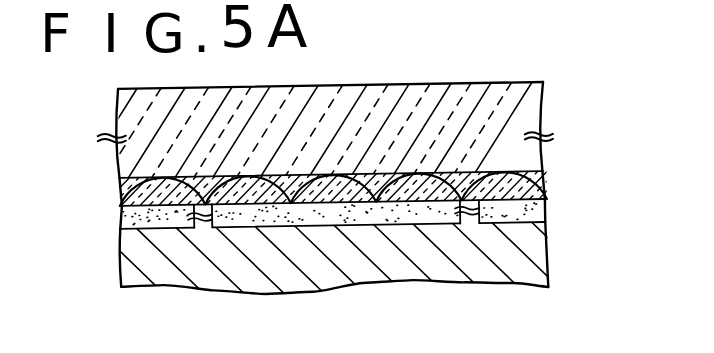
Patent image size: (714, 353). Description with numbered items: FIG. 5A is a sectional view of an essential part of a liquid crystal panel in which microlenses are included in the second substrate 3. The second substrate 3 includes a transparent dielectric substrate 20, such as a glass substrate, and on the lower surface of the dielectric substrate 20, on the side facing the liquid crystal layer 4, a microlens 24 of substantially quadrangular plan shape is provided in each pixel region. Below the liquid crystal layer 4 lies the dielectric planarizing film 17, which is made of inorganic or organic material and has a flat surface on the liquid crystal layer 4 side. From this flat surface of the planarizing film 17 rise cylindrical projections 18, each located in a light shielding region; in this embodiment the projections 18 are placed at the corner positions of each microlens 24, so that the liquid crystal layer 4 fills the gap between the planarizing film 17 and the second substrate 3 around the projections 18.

The second substrate 3 is at (363, 141).
The dielectric substrate 20 is at (517, 113).
The microlens 24 is at (520, 188).
The liquid crystal layer 4 is at (525, 212).
The planarizing film 17 is at (528, 258).
The projection 18 is at (467, 223).